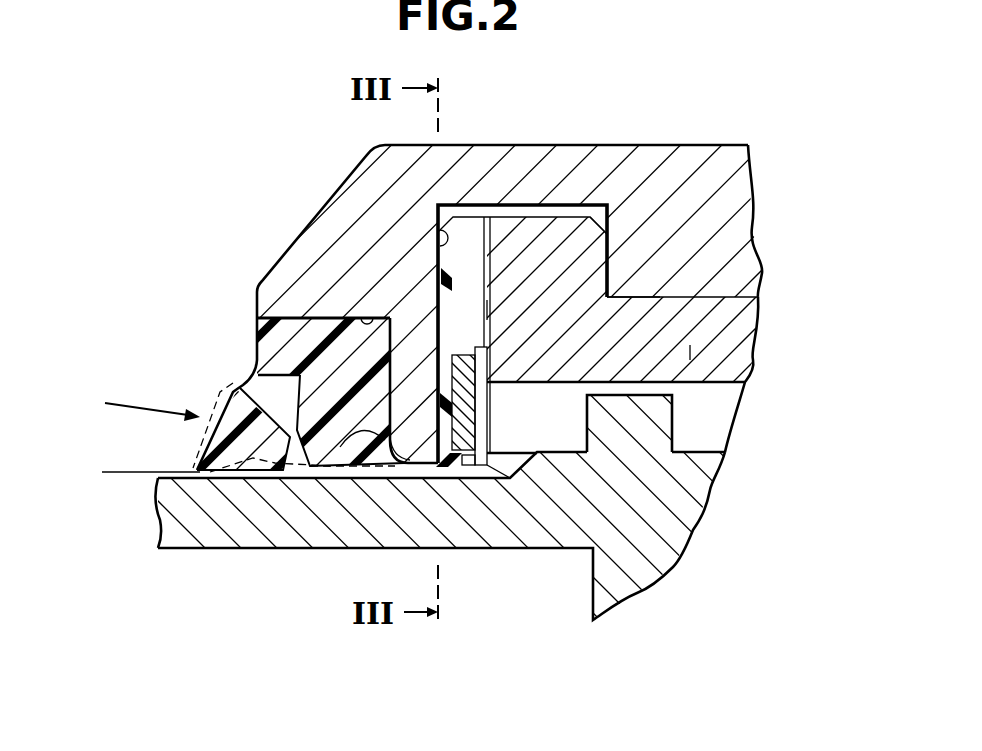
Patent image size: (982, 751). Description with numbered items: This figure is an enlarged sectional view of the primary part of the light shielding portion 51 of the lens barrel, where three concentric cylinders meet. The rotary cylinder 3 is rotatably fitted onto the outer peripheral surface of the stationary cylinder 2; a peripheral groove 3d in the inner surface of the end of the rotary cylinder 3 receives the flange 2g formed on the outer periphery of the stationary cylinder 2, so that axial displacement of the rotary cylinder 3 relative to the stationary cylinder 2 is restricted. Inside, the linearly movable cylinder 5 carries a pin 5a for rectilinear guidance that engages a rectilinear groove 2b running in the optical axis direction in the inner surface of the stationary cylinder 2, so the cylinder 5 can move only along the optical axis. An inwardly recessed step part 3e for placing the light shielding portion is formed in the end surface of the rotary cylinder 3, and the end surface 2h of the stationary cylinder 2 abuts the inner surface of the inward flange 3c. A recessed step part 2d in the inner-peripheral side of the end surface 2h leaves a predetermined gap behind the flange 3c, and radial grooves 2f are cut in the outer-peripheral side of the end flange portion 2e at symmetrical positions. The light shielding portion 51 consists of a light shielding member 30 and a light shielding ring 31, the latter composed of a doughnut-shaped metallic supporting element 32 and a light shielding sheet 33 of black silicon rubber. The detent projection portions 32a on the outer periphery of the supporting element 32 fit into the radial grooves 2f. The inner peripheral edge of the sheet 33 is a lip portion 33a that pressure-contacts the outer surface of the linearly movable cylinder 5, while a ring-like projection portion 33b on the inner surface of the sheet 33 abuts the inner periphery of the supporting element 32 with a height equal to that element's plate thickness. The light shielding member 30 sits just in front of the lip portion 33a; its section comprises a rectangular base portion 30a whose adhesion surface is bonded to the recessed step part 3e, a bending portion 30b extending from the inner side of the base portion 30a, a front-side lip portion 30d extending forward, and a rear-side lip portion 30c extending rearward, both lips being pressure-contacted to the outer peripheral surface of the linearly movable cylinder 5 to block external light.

The stationary cylinder 2 is at (700, 331).
The rectilinear groove 2b is at (700, 407).
The recessed step part 2d is at (690, 353).
The end flange portion 2e is at (467, 260).
The radial grooves 2f is at (477, 293).
The flange 2g is at (587, 247).
The end surface 2h is at (440, 240).
The rotary cylinder 3 is at (718, 226).
The inward flange 3c is at (410, 437).
The peripheral groove 3d is at (562, 213).
The recessed step part 3e is at (360, 318).
The linearly movable cylinder 5 is at (668, 523).
The pin 5a is at (632, 415).
The light shielding member 30 is at (283, 345).
The base portion 30a is at (280, 341).
The bending portion 30b is at (317, 403).
The rear-side lip portion 30c is at (330, 460).
The front-side lip portion 30d is at (227, 470).
The light shielding ring 31 is at (440, 280).
The supporting element 32 is at (452, 375).
The detent projection portions 32a is at (465, 318).
The light shielding sheet 33 is at (447, 428).
The lip portion 33a is at (463, 468).
The ring-like projection portion 33b is at (503, 463).
The light shielding portion 51 is at (135, 433).